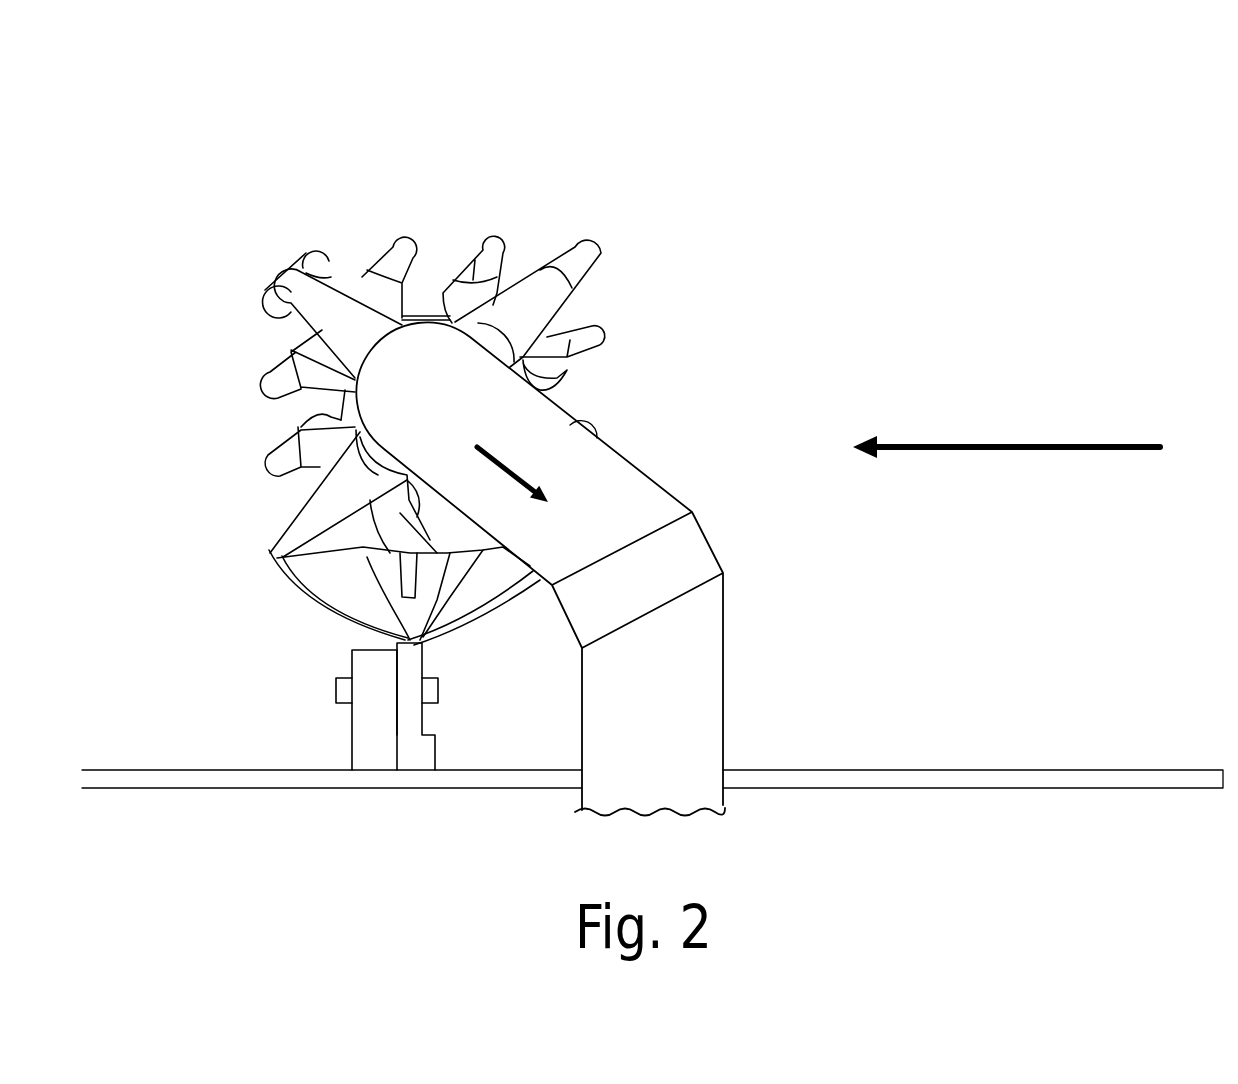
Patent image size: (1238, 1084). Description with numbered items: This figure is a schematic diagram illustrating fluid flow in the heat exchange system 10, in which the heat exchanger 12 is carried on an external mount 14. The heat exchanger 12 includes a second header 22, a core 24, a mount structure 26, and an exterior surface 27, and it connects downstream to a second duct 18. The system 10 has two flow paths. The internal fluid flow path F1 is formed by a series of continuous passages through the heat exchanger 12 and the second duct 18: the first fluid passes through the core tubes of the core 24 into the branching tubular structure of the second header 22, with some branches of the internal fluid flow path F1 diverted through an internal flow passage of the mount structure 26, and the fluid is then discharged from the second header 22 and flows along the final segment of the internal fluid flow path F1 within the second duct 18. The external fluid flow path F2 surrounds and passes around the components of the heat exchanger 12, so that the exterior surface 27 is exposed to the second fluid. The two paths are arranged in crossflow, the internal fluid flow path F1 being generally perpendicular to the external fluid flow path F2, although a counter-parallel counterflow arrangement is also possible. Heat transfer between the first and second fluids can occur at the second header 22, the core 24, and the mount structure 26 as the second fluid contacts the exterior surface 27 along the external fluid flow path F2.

The heat exchange system 10 is at (672, 427).
The heat exchanger 12 is at (483, 212).
The external mount 14 is at (370, 733).
The second duct 18 is at (552, 433).
The second header 22 is at (515, 327).
The core 24 is at (268, 275).
The mount structure 26 is at (408, 663).
The exterior surface 27 is at (555, 290).
The internal fluid flow path F1 is at (527, 472).
The external fluid flow path F2 is at (1044, 444).